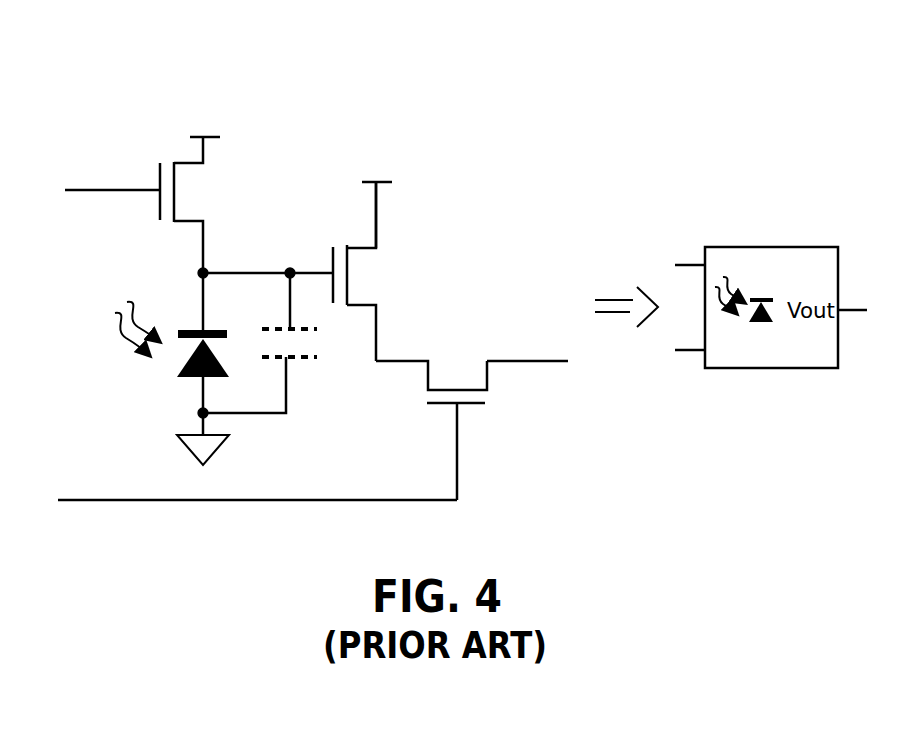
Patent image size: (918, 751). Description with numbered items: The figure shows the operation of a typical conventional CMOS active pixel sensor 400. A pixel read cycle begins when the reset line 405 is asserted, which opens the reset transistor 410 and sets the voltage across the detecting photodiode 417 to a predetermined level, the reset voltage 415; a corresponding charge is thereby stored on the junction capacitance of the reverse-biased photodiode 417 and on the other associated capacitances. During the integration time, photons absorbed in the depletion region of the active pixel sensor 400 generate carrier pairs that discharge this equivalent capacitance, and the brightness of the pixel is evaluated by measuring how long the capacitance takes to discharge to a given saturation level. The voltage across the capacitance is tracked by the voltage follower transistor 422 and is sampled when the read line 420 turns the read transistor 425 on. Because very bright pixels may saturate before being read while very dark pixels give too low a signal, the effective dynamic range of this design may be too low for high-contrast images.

The CMOS active pixel sensor 400 is at (384, 80).
The reset line 405 is at (118, 156).
The transistor M1 410 is at (257, 175).
The reset voltage V_RES 415 is at (240, 110).
The detecting photodiode 417 is at (179, 381).
The read line 420 is at (95, 512).
The voltage follower M2 422 is at (455, 254).
The transistor M3 425 is at (473, 325).